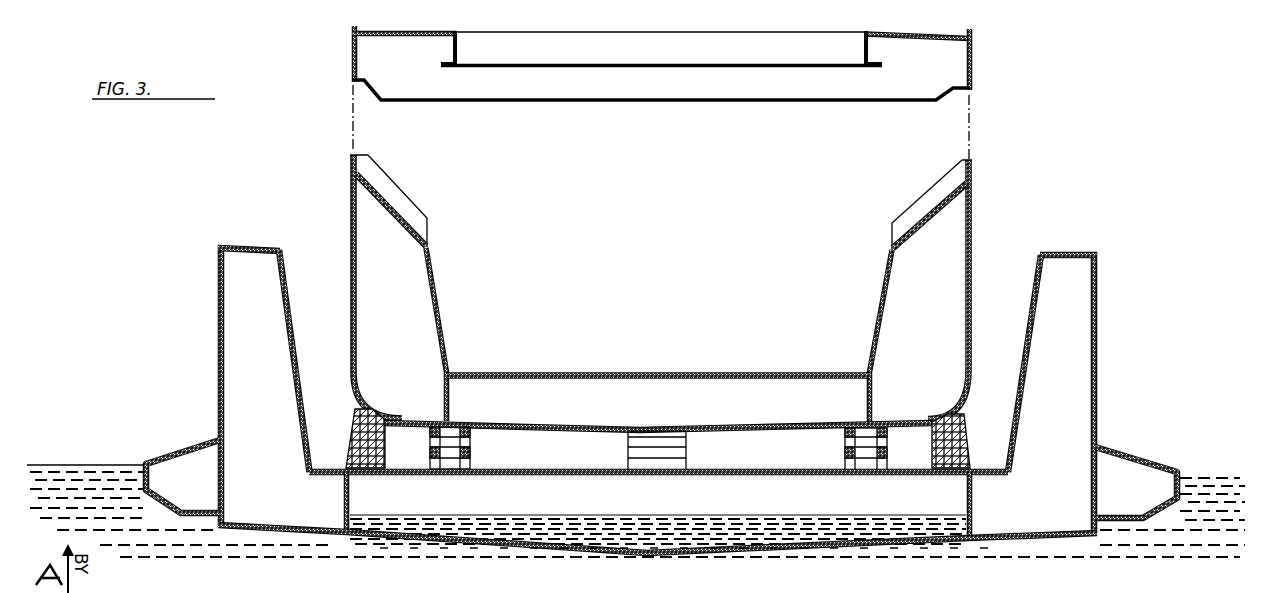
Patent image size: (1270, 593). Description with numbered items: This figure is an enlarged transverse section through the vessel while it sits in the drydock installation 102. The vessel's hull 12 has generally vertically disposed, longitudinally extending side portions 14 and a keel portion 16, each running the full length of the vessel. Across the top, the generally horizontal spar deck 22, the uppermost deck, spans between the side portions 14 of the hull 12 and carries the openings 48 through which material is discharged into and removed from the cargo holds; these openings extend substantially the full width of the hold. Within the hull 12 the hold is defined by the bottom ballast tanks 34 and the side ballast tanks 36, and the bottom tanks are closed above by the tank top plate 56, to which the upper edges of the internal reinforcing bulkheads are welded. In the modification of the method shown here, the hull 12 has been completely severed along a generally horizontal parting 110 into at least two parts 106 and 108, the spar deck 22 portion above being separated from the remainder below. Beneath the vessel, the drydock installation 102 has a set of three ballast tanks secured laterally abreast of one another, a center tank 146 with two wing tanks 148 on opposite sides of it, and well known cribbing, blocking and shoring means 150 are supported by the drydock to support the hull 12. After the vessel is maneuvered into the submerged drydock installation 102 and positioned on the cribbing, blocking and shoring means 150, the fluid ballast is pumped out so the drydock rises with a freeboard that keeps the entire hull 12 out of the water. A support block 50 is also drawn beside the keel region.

The hull 12 is at (661, 374).
The side portions 14 is at (350, 258).
The keel portion 16 is at (537, 422).
The spar deck 22 is at (433, 33).
The bottom ballast tanks 34 is at (652, 390).
The side ballast tanks 36 is at (417, 323).
The openings 48 is at (582, 46).
The support block 50 is at (962, 419).
The tank top plate 56 is at (497, 372).
The drydock installation 102 is at (533, 553).
The hull part 106 is at (713, 54).
The hull part 108 is at (986, 215).
The parting 110 is at (986, 120).
The center tank 146 is at (683, 513).
The wing tanks 148 is at (297, 511).
The cribbing, blocking and shoring means 150 is at (386, 437).